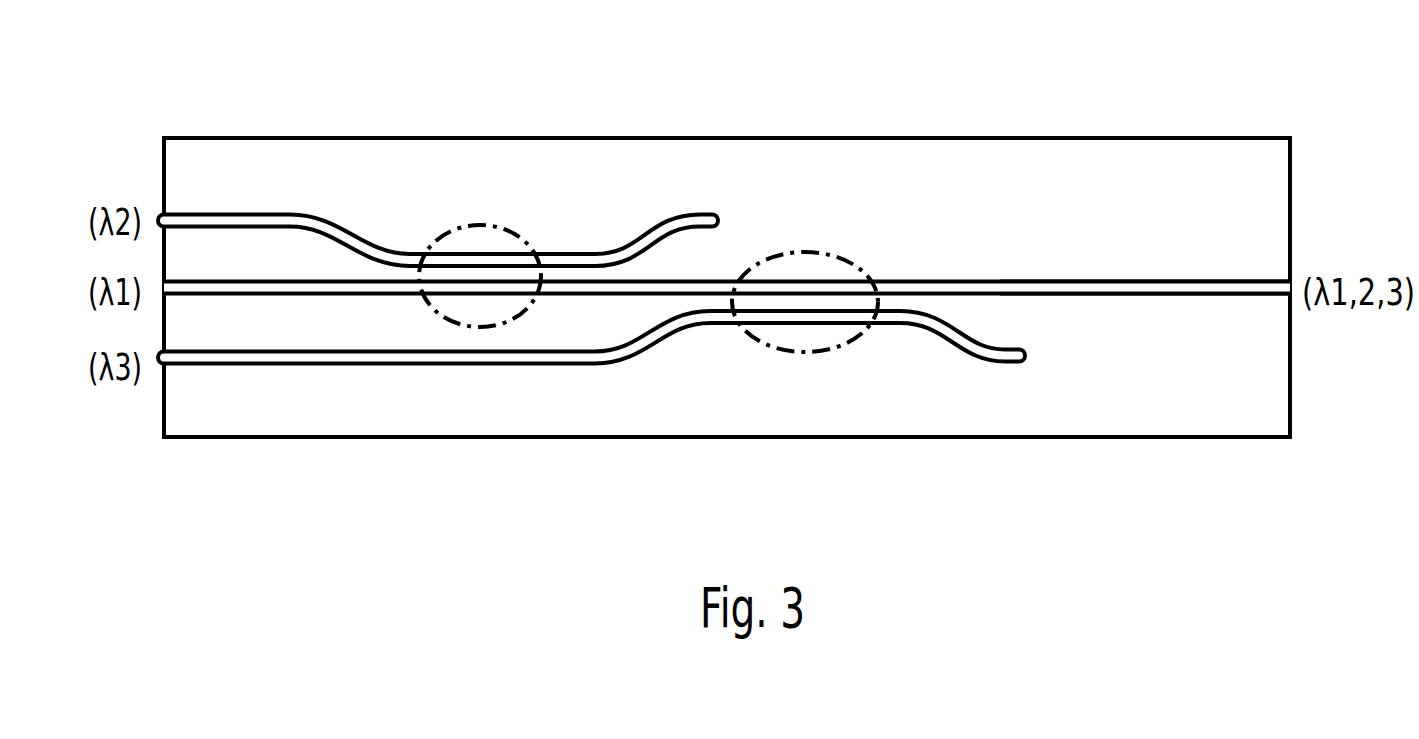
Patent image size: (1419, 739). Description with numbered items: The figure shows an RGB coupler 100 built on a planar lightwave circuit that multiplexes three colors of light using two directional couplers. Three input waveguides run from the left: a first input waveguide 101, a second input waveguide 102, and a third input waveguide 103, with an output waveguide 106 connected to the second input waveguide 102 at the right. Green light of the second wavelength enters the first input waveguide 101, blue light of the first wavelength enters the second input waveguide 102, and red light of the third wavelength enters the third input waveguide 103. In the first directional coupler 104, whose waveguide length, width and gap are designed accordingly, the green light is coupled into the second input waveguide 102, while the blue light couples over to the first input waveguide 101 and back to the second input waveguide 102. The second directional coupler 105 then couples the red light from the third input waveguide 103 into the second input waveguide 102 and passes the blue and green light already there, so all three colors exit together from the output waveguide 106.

The RGB coupler 100 is at (826, 137).
The first input waveguide 101 is at (243, 216).
The second input waveguide 102 is at (270, 290).
The third input waveguide 103 is at (265, 360).
The first directional coupler 104 is at (487, 224).
The second directional coupler 105 is at (800, 354).
The output waveguide 106 is at (1162, 283).